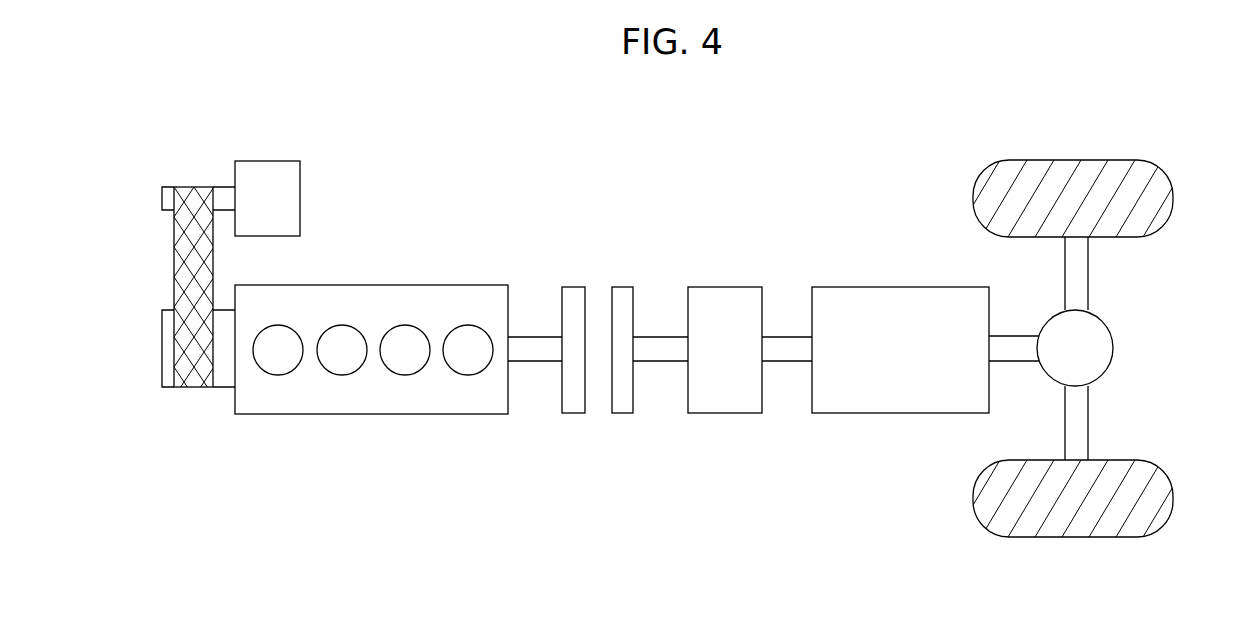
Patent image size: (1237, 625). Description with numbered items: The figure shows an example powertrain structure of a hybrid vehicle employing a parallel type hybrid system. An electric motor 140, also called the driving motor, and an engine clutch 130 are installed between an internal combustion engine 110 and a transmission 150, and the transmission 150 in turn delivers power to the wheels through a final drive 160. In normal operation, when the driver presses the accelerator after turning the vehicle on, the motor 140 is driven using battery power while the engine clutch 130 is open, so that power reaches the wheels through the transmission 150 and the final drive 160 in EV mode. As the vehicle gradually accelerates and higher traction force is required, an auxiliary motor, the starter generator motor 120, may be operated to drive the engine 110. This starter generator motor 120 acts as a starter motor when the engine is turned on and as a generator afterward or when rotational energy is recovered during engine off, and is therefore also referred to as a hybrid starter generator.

The internal combustion engine 110 is at (461, 286).
The starter generator motor 120 is at (255, 162).
The engine clutch 130 is at (625, 287).
The electric motor 140 is at (718, 287).
The transmission 150 is at (943, 287).
The final drive 160 is at (1112, 324).